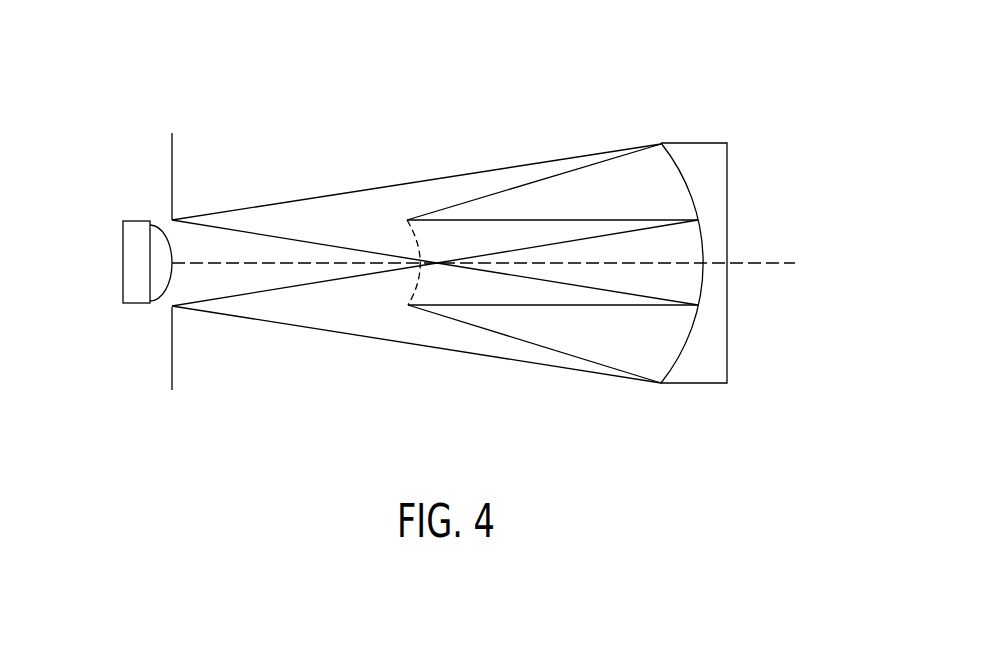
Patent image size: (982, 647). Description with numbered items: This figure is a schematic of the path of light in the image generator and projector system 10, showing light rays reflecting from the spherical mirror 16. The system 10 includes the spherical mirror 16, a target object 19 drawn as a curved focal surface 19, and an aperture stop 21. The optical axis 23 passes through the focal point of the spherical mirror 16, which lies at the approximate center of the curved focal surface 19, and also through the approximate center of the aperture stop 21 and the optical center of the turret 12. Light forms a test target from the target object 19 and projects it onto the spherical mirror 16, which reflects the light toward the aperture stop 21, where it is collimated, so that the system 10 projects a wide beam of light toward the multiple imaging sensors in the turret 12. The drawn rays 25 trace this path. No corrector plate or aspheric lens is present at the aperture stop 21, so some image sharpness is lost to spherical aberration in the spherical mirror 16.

The image generator and projector system 10 is at (435, 66).
The turret 12 is at (122, 260).
The spherical mirror 16 is at (687, 184).
The target object (curved focal surface) 19 is at (417, 245).
The aperture stop 21 is at (172, 375).
The optical axis 23 is at (753, 263).
The light rays 25 is at (313, 283).